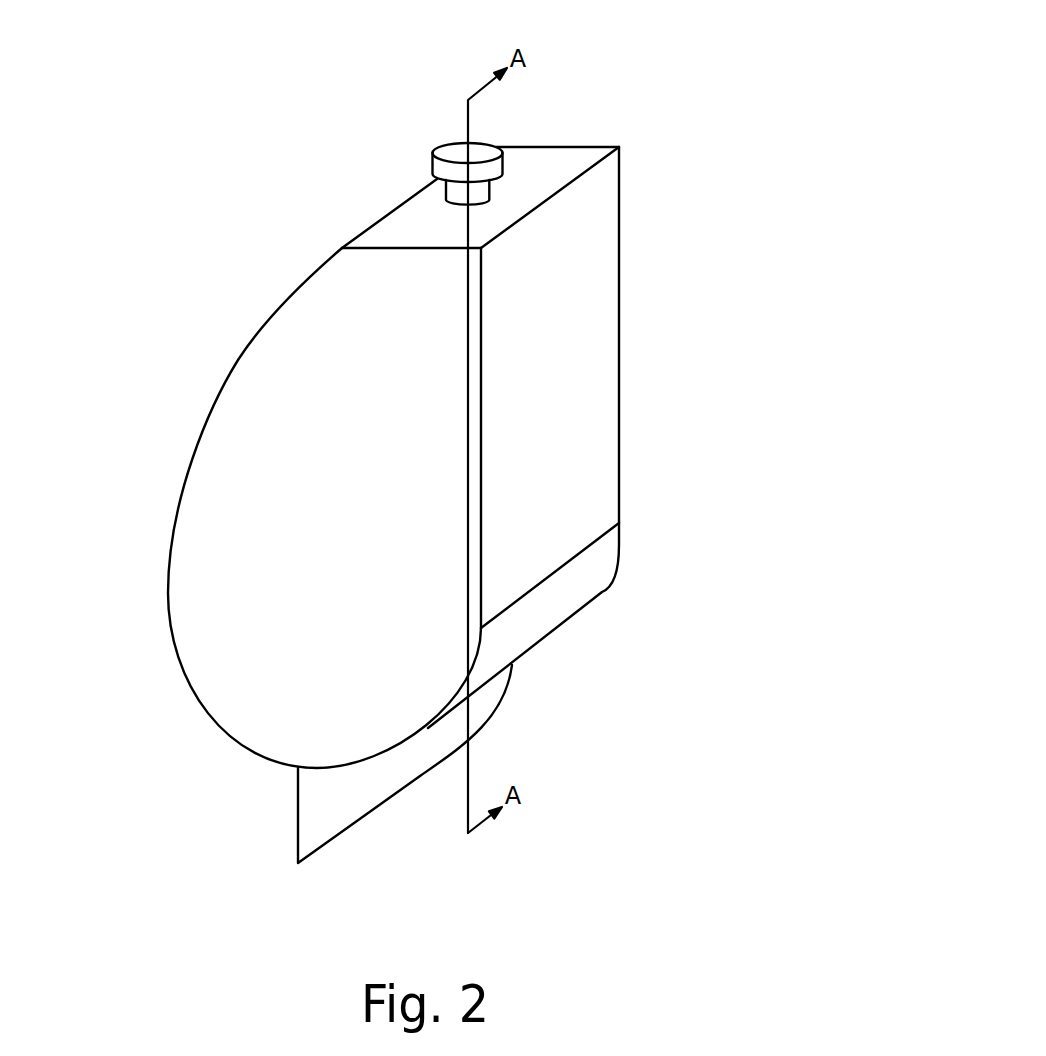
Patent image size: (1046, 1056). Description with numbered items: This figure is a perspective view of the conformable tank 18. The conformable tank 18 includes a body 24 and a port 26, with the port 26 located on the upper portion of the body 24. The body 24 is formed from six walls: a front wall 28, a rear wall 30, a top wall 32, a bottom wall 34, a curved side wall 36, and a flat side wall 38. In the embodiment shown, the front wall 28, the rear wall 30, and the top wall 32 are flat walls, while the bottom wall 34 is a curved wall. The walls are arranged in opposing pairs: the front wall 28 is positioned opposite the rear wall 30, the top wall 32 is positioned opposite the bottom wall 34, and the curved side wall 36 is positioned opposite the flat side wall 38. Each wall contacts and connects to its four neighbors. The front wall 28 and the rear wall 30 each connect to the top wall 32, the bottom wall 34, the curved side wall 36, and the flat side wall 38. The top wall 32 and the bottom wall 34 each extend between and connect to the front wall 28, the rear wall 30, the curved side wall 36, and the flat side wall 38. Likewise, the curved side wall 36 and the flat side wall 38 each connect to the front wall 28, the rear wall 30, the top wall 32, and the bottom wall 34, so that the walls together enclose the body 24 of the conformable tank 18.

The conformable tank 18 is at (770, 517).
The body 24 is at (258, 256).
The port 26 is at (490, 155).
The front wall 28 is at (227, 620).
The rear wall 30 is at (628, 268).
The top wall 32 is at (568, 162).
The bottom wall 34 is at (395, 781).
The curved side wall 36 is at (195, 427).
The flat side wall 38 is at (565, 413).